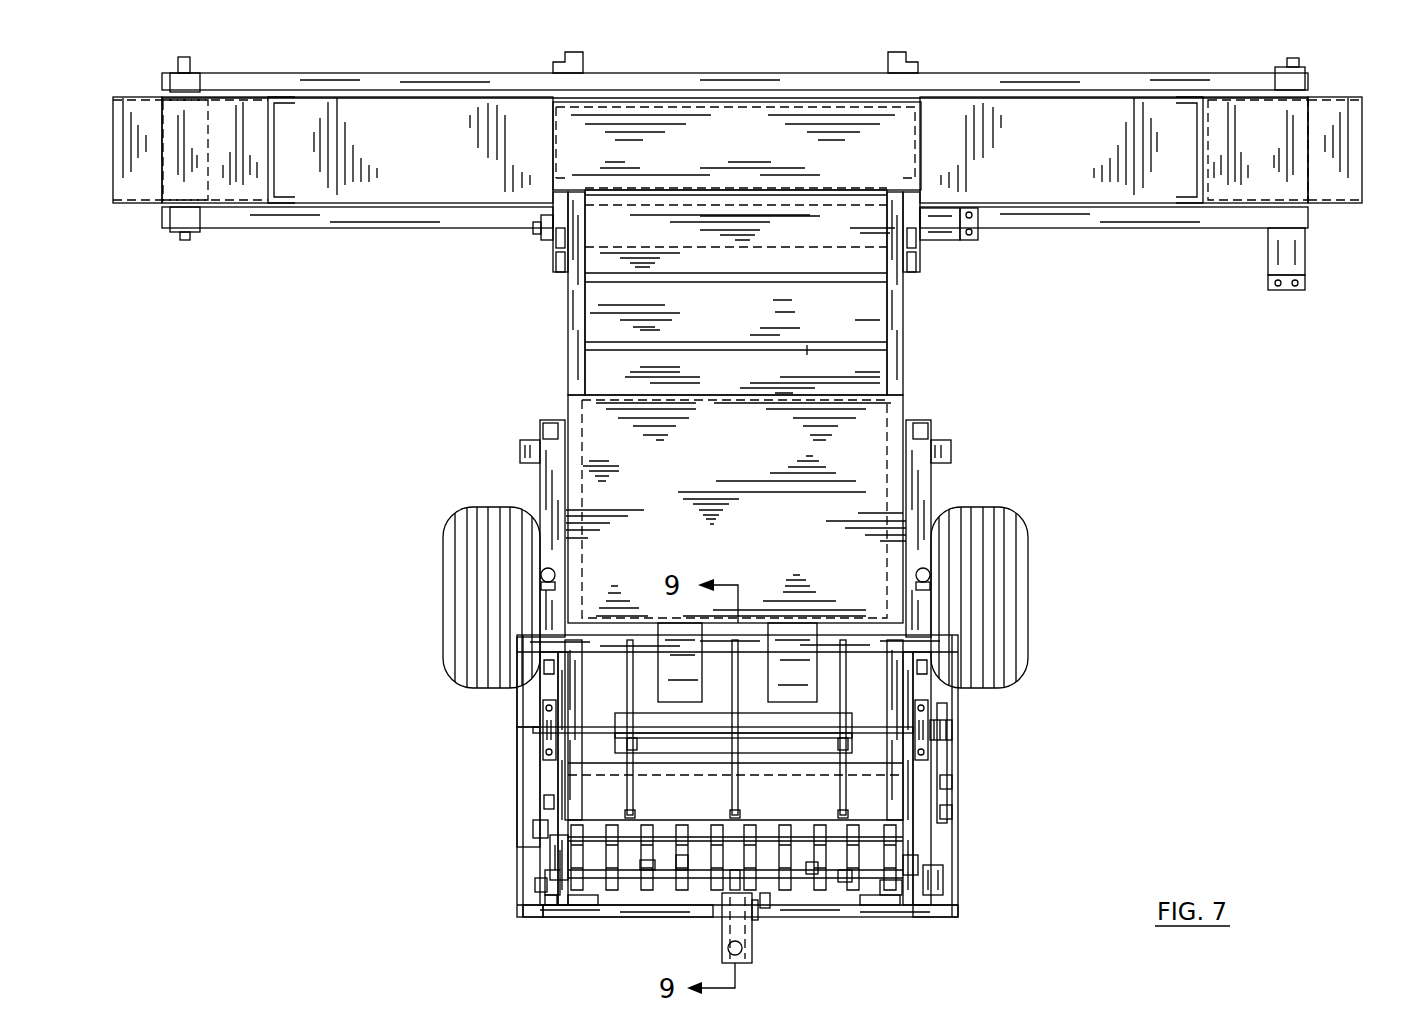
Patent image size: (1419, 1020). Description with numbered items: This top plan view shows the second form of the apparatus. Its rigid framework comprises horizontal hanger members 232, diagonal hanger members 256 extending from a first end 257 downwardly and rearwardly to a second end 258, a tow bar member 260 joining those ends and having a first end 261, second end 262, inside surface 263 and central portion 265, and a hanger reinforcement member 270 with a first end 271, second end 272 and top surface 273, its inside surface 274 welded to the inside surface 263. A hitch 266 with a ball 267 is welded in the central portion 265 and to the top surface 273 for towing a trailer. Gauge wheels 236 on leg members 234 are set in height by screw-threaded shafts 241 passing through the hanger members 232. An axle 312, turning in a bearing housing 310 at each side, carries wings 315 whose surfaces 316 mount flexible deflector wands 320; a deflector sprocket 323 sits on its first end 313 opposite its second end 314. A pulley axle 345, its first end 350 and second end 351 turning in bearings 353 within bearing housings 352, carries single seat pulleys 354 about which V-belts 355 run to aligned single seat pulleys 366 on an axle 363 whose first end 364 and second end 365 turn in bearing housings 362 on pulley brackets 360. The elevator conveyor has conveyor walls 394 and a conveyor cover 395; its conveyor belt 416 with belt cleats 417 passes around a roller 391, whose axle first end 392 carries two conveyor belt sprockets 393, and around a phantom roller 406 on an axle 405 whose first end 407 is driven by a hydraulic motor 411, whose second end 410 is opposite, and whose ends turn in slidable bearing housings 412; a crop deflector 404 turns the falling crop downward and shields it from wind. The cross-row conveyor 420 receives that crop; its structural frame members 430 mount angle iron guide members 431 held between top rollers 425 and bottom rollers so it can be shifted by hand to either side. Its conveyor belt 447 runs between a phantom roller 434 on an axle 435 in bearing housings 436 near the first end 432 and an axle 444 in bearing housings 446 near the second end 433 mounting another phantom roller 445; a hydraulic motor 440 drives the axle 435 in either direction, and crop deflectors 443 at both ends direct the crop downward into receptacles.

The end plate 443 is at (128, 128).
The bolt 444 is at (190, 72).
The nut 446 is at (205, 82).
The channel bracket 433 is at (284, 128).
The upper rail 430 is at (452, 90).
The mounting bracket 425 is at (588, 80).
The lower rail 431 is at (686, 84).
The wing assembly 420 is at (1020, 118).
The channel bracket 432 is at (1190, 135).
The nut 436 is at (1285, 78).
The bolt 435 is at (1300, 62).
The telescoping wing section 434 is at (1318, 103).
The telescoping wing section 445 is at (208, 176).
The wing beam 447 is at (405, 147).
The hopper 404 is at (718, 146).
The side bracket 405 is at (905, 228).
The hidden cross member 406 is at (735, 243).
The mounting block 407 is at (925, 240).
The bracket 411 is at (975, 240).
The side bracket 410 is at (573, 232).
The pin 412 is at (545, 236).
The hitch bracket 440 is at (1295, 250).
The frame 416 is at (716, 321).
The cross member 417 is at (807, 348).
The upright post 394 is at (568, 327).
The box 395 is at (713, 436).
The bolt 234 is at (548, 480).
The upright 232 is at (548, 505).
The wheel 236 is at (462, 547).
The pivot bolt 241 is at (556, 576).
The side frame member 257 is at (518, 643).
The lever plate 314 is at (597, 735).
The rod 320 is at (740, 660).
The lever plate 312 is at (878, 735).
The shaft 310 is at (548, 715).
The gear 323 is at (950, 726).
The bar 315 is at (727, 745).
The side frame member 256 is at (520, 752).
The cross bar 391 is at (765, 775).
The lever 392 is at (946, 790).
The nut 393 is at (947, 815).
The slotted plate 316 is at (668, 760).
The roller 363 is at (735, 838).
The disc 366 is at (635, 840).
The slotted plate 313 is at (895, 740).
The block 360 is at (546, 816).
The bolt 365 is at (540, 834).
The bearing 362 is at (548, 848).
The bearing 364 is at (920, 863).
The bolt 350 is at (942, 876).
The bracket 351 is at (543, 876).
The bolt 353 is at (545, 886).
The frame 258 is at (540, 895).
The nut 352 is at (548, 905).
The frame member 261 is at (538, 914).
The frame member 272 is at (585, 902).
The roller shaft 355 is at (648, 866).
The bottom bar 260 is at (620, 914).
The arm 270 is at (682, 864).
The hitch 345 is at (725, 905).
The roller hub 266 is at (733, 882).
The bracket 263 is at (766, 902).
The hitch plate 265 is at (754, 915).
The hitch pin hole 267 is at (742, 953).
The arm 354 is at (812, 872).
The arm 274 is at (845, 882).
The frame member 273 is at (875, 905).
The frame member 271 is at (895, 895).
The frame corner 262 is at (950, 915).